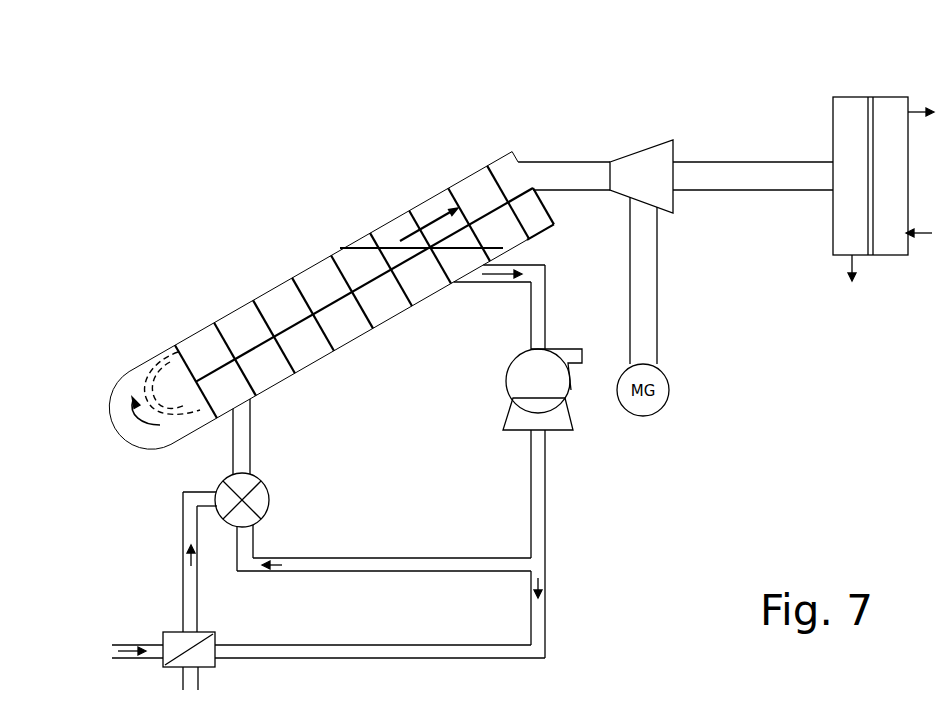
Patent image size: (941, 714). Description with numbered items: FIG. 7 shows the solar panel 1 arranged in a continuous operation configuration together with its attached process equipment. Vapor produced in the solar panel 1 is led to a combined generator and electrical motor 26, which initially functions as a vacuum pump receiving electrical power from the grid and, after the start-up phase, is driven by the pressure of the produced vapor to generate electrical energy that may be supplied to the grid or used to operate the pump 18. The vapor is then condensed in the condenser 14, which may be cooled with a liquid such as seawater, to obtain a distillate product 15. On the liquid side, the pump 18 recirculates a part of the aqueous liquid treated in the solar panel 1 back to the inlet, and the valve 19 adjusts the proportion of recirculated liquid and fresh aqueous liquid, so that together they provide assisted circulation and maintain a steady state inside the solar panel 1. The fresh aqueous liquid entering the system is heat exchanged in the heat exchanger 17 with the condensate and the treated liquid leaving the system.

The solar panel 1 is at (320, 222).
The condenser 14 is at (847, 95).
The distillate product 15 is at (861, 284).
The heat exchanger 17 is at (210, 648).
The pump 18 is at (568, 392).
The valve 19 is at (268, 496).
The combined generator and electrical motor 26 is at (667, 140).